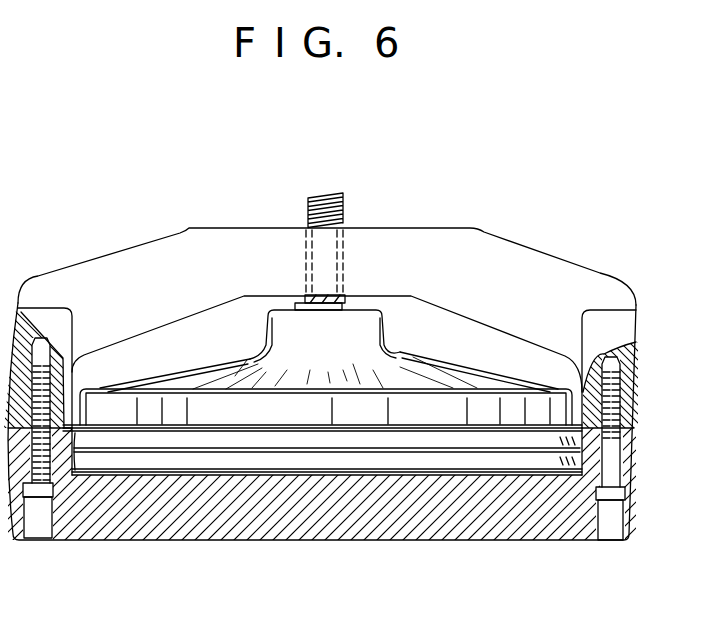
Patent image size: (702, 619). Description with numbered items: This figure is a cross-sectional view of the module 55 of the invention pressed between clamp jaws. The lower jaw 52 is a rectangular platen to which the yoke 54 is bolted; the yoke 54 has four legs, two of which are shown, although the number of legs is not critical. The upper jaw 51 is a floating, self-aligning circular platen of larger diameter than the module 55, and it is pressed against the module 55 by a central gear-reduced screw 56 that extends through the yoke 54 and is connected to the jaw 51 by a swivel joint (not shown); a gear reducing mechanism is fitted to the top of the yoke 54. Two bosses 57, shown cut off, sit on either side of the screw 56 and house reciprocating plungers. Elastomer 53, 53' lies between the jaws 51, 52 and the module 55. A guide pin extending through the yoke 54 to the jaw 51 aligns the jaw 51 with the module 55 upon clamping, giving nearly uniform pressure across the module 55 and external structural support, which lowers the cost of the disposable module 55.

The jaw 51 is at (418, 371).
The jaw 52 is at (631, 466).
The elastomer 53 is at (322, 415).
The elastomer 53' is at (327, 527).
The yoke 54 is at (575, 278).
The module 55 is at (254, 457).
The screw 56 is at (345, 208).
The boss 57 is at (351, 313).